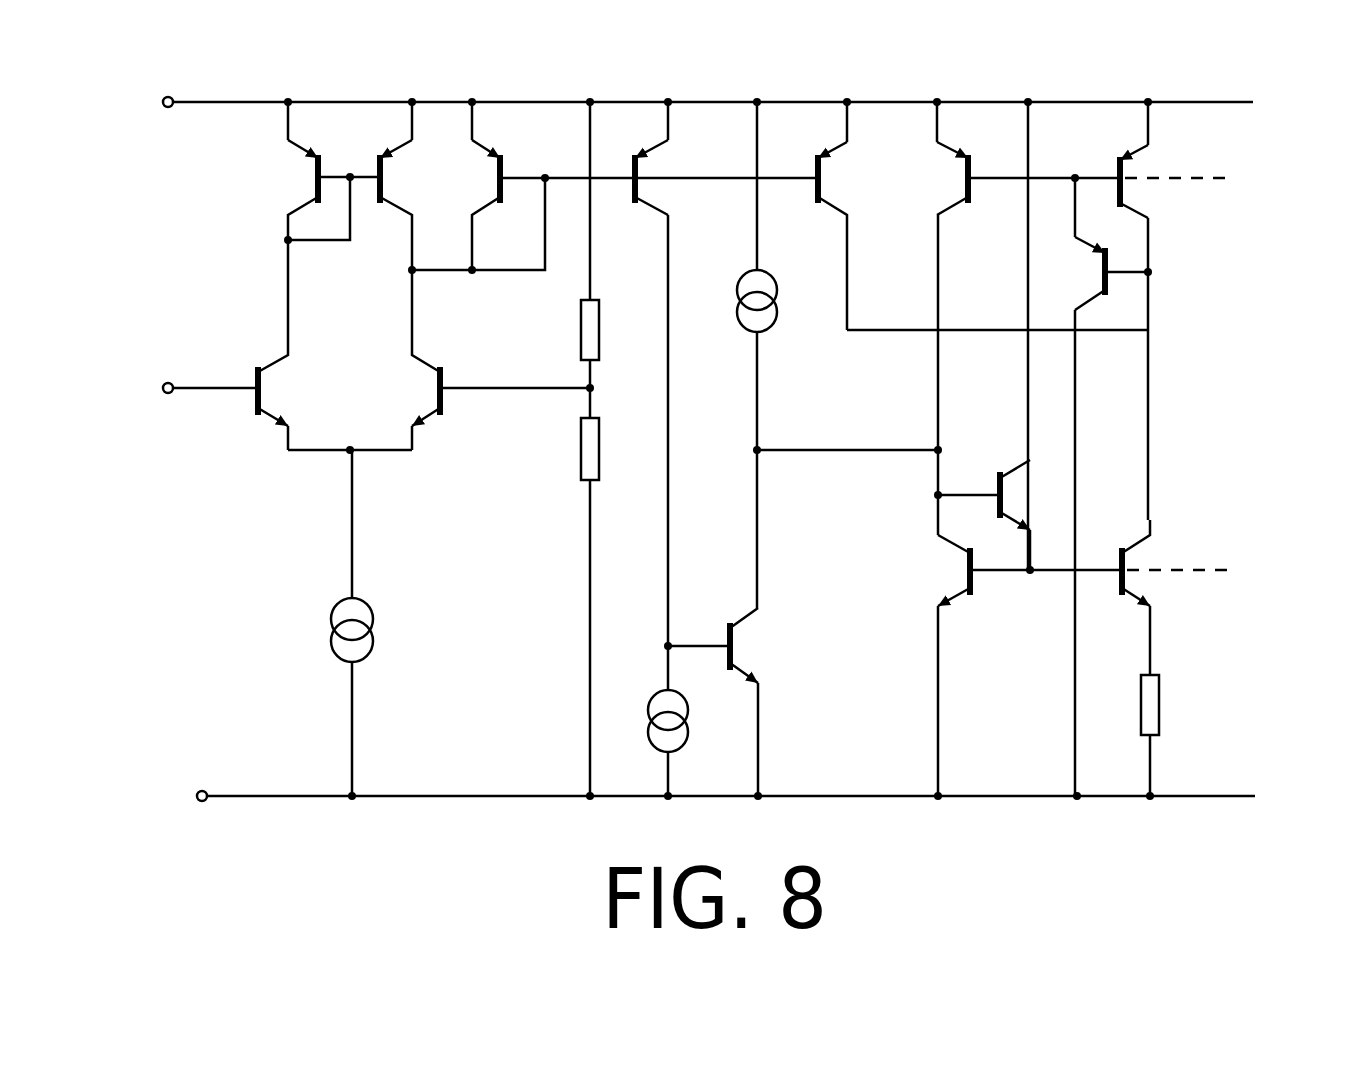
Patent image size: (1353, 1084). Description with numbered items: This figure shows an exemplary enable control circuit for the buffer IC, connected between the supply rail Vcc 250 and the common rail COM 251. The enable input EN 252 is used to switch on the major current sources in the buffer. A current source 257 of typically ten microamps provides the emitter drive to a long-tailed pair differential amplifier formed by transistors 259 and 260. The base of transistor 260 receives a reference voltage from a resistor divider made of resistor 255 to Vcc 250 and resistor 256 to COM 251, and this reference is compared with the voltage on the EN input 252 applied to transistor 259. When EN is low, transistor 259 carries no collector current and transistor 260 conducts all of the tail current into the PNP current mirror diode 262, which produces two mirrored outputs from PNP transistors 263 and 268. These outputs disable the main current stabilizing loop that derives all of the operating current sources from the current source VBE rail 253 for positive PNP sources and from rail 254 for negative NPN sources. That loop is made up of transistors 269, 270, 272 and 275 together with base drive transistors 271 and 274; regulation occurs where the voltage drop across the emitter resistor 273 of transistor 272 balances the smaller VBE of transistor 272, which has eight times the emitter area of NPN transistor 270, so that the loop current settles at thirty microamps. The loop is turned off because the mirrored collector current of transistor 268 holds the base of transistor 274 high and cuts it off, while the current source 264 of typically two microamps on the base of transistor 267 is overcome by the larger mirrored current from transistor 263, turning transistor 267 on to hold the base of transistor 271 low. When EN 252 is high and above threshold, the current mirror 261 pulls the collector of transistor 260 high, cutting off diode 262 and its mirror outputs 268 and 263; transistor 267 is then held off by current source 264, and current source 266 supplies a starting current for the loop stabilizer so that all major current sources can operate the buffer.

The Vcc 250 is at (162, 102).
The COM 251 is at (196, 796).
The enable input EN 252 is at (162, 388).
The current source VBE rail 253 is at (1225, 190).
The rail for negative NPN current sources 254 is at (1225, 570).
The resistor 255 is at (570, 322).
The resistor 256 is at (570, 450).
The current source 257 is at (320, 630).
The transistor 259 is at (260, 423).
The transistor 260 is at (433, 388).
The current mirror 261 is at (377, 148).
The PNP current mirror diode 262 is at (548, 145).
The PNP transistor 263 is at (622, 186).
The current source 264 is at (700, 718).
The current source 266 is at (810, 288).
The transistor 267 is at (716, 630).
The PNP transistor 268 is at (833, 180).
The transistor 269 is at (948, 178).
The NPN transistor 270 is at (985, 587).
The base drive transistor 271 is at (988, 478).
The NPN transistor 272 is at (1143, 583).
The emitter resistor 273 is at (1166, 700).
The base drive transistor 274 is at (1113, 281).
The transistor 275 is at (1110, 168).